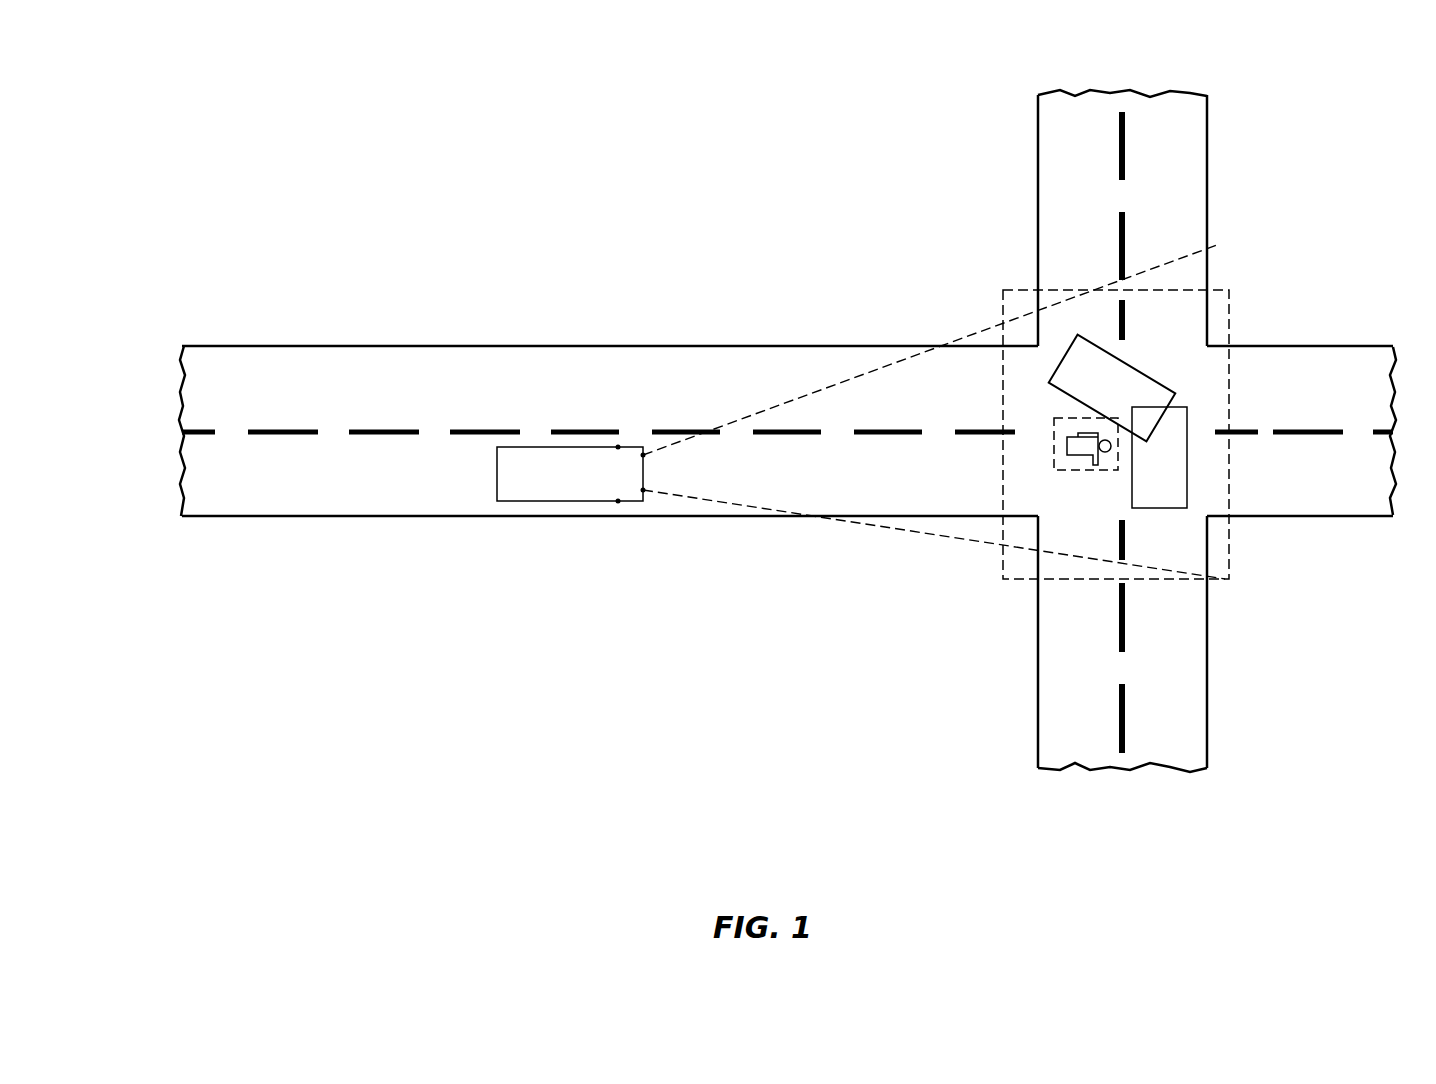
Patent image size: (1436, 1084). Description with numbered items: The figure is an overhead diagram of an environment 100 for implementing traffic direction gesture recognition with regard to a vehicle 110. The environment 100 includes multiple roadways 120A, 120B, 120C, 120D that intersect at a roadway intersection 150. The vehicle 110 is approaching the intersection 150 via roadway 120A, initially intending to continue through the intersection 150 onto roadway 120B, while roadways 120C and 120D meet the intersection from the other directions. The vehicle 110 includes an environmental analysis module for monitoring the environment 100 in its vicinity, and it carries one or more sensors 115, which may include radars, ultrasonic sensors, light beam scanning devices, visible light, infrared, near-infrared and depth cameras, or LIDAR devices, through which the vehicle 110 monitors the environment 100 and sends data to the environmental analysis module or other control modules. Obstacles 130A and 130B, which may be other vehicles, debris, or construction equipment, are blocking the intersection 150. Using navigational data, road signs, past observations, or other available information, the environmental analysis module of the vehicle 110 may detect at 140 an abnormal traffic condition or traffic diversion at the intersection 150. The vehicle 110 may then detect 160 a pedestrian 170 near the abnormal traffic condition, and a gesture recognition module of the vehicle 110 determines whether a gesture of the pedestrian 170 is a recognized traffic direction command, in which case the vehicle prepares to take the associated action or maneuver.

The environment 100 is at (211, 128).
The vehicle 110 is at (570, 474).
The sensors 115 is at (626, 508).
The roadway 120A is at (608, 431).
The roadway 120B is at (1301, 431).
The roadway 120C is at (1122, 218).
The roadway 120D is at (1122, 644).
The obstacle 130A is at (1112, 388).
The obstacle 130B is at (1159, 457).
The detection of abnormal traffic condition 140 is at (1017, 286).
The roadway intersection 150 is at (1180, 368).
The pedestrian detection 160 is at (1058, 477).
The pedestrian 170 is at (1062, 448).